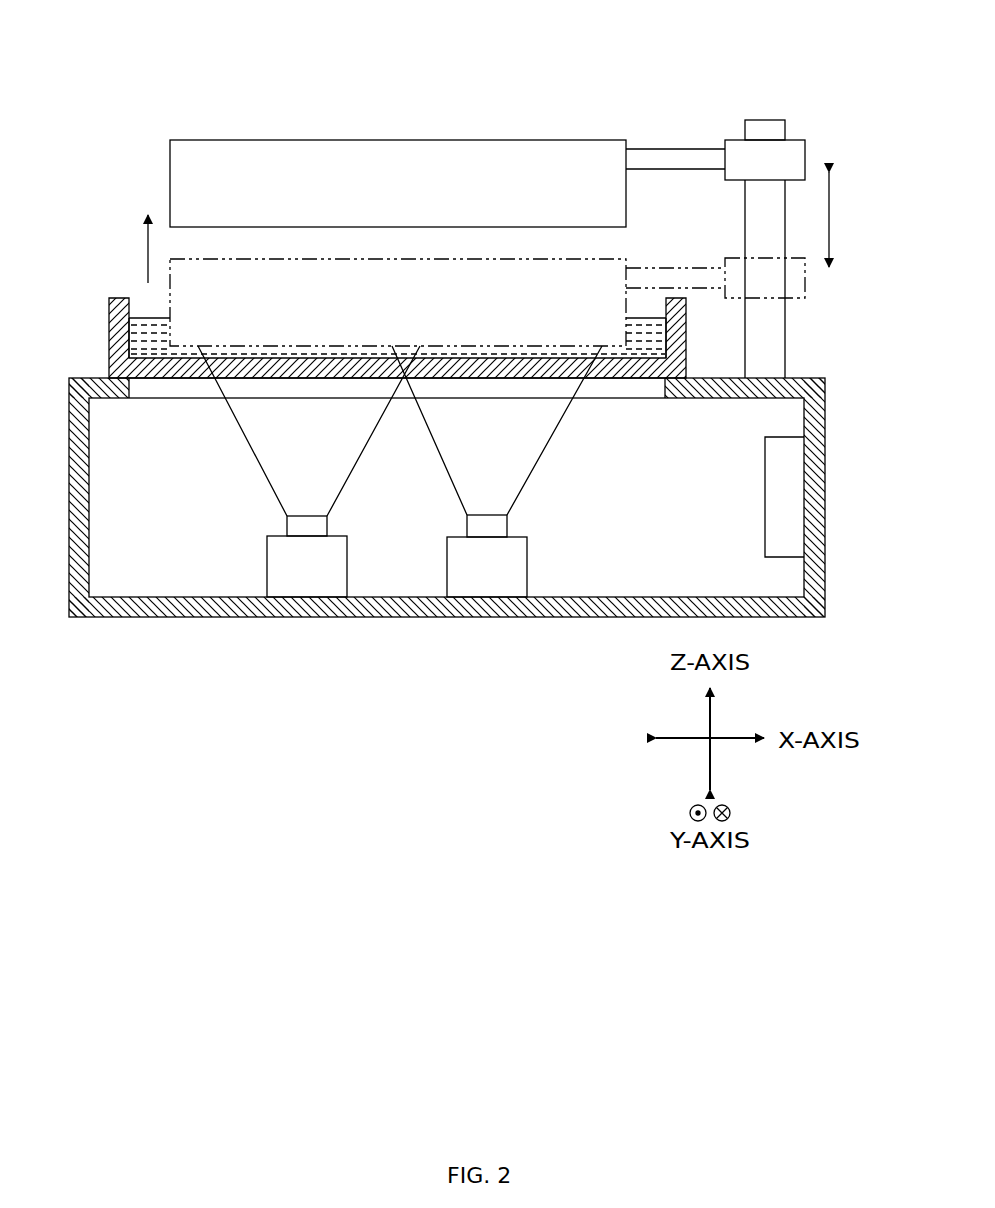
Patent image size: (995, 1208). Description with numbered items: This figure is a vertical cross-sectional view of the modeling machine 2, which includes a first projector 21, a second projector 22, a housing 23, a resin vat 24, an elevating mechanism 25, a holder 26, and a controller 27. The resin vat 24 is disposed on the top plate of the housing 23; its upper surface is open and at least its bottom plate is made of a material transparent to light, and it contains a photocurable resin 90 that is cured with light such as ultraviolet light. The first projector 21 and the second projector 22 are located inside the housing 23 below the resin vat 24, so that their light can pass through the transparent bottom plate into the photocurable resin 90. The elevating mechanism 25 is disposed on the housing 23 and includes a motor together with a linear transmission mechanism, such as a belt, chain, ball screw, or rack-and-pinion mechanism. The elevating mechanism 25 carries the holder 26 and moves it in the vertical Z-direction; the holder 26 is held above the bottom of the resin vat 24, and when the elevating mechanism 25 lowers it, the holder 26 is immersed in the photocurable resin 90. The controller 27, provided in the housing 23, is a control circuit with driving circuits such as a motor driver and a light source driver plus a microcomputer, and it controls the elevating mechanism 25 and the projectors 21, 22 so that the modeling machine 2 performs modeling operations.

The modeling machine 2 is at (807, 80).
The first projector 21 is at (310, 580).
The second projector 22 is at (490, 578).
The housing 23 is at (143, 600).
The resin vat 24 is at (115, 340).
The elevating mechanism 25 is at (797, 155).
The holder 26 is at (410, 270).
The controller 27 is at (795, 498).
The photocurable resin 90 is at (150, 323).